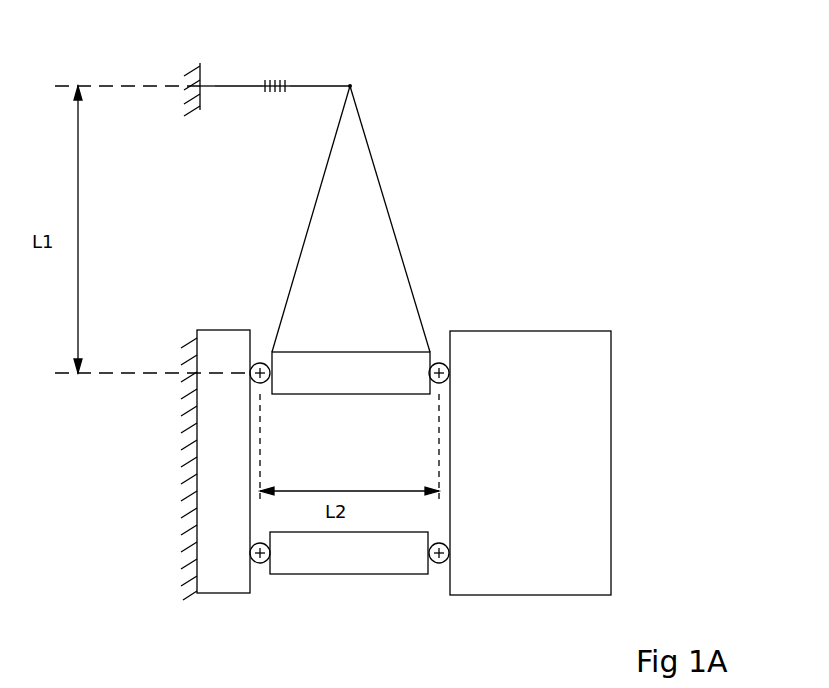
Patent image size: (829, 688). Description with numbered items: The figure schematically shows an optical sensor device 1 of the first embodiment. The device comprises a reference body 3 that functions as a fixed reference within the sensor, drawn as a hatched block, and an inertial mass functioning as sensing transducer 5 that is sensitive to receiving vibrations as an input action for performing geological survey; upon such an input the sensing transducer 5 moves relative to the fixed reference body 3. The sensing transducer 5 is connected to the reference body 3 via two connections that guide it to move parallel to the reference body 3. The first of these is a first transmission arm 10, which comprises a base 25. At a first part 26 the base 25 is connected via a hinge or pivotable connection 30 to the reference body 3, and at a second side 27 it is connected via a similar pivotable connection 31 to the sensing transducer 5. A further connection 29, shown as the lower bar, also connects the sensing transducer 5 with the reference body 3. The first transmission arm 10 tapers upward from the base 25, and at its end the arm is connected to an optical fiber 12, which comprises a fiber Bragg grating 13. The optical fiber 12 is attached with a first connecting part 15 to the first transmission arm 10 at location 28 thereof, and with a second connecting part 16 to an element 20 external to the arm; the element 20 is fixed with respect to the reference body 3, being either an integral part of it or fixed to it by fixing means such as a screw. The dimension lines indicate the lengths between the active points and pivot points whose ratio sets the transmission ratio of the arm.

The optical sensor device 1 is at (516, 180).
The reference body 3 is at (215, 330).
The sensing transducer 5 is at (548, 331).
The first transmission arm 10 is at (393, 226).
The optical fiber 12 is at (238, 88).
The fiber Bragg grating 13 is at (275, 97).
The first connecting part 15 is at (350, 86).
The second connecting part 16 is at (205, 86).
The external element 20 is at (210, 64).
The base 25 is at (346, 396).
The first part of the base 26 is at (265, 360).
The second side of the base 27 is at (434, 360).
The location on the first transmission arm 28 is at (354, 90).
The further connection 29 is at (340, 560).
The pivotable connection 30 is at (278, 501).
The pivotable connection 31 is at (420, 506).